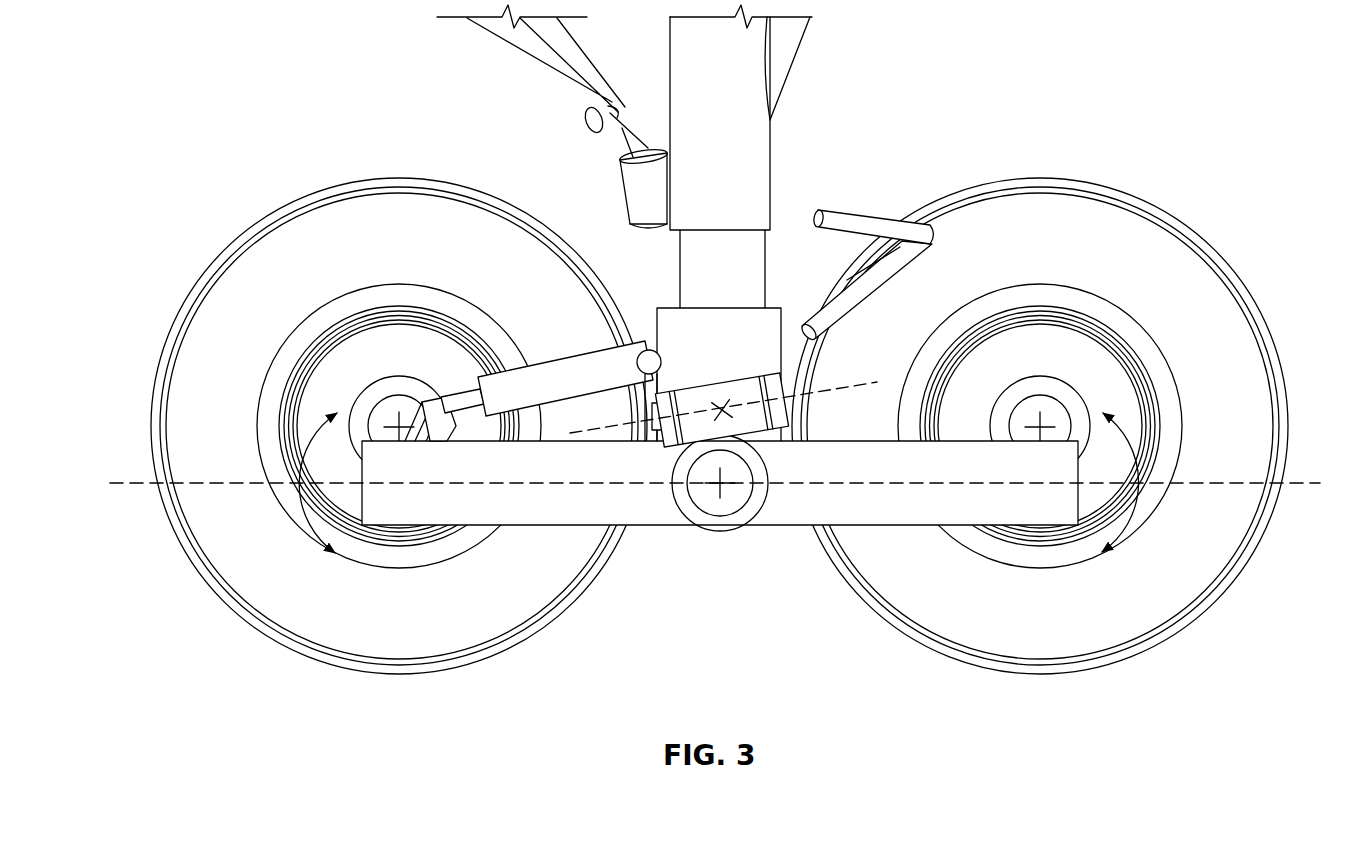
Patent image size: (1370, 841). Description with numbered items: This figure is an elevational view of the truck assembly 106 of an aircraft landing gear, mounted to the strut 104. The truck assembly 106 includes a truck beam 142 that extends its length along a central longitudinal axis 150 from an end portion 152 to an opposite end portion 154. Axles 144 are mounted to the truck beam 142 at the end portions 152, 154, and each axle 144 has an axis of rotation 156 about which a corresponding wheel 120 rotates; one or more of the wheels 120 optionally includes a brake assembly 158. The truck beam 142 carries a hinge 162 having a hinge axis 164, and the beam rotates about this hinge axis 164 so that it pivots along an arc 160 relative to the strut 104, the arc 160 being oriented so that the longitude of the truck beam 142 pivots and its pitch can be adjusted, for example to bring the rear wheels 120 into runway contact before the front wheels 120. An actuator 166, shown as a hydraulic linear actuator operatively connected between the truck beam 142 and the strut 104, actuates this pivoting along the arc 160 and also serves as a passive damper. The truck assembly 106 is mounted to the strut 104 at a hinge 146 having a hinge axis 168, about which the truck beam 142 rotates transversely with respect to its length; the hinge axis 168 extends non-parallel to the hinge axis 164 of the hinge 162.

The strut 104 is at (777, 173).
The truck assembly 106 is at (798, 624).
The wheels 120 is at (398, 170).
The truck beam 142 is at (802, 510).
The axles 144 is at (380, 397).
The hinge 146 is at (721, 376).
The central longitudinal axis 150 is at (128, 488).
The end portion 152 is at (1060, 553).
The end portion 154 is at (348, 548).
The axis of rotation 156 is at (413, 393).
The brake assembly 158 is at (320, 388).
The arc 160 is at (307, 512).
The hinge 162 is at (676, 512).
The hinge axis 164 is at (726, 490).
The actuator 166 is at (546, 352).
The hinge axis 168 is at (606, 422).